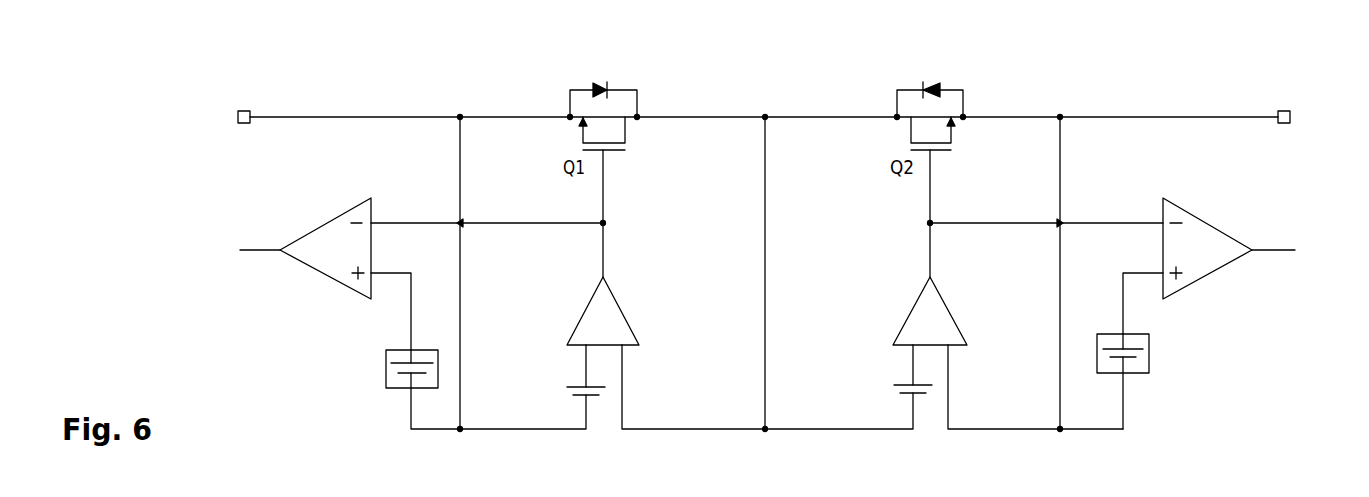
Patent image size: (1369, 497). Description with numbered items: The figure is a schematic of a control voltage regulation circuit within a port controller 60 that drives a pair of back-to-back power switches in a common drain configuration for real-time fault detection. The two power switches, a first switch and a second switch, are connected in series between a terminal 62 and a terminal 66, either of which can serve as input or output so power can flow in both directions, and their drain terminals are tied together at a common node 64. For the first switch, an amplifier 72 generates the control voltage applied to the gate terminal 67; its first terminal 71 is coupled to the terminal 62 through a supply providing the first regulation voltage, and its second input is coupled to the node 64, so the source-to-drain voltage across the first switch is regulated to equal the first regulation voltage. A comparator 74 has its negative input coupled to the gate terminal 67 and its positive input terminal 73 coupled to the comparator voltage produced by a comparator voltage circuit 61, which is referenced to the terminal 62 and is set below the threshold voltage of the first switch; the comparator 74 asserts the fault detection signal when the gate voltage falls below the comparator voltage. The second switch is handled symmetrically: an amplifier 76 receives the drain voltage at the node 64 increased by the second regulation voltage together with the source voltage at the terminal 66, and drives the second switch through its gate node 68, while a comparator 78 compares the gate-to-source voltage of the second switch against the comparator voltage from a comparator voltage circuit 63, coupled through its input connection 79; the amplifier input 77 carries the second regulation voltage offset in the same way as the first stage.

The port controller 60 is at (1183, 47).
The comparator voltage circuit 61 is at (392, 390).
The terminal 62 is at (517, 112).
The comparator voltage circuit 63 is at (1130, 375).
The node 64 is at (785, 112).
The terminal 66 is at (1027, 112).
The gate terminal 67 is at (605, 200).
The second gate node 68 is at (932, 186).
The first terminal of the amplifier 71 is at (585, 360).
The amplifier 72 is at (616, 300).
The positive input terminal 73 is at (410, 315).
The comparator 74 is at (315, 269).
The amplifier 76 is at (943, 300).
The second regulated voltage source VREG2 77 is at (912, 358).
The comparator 78 is at (1207, 275).
The second comparator non-inverting input connection 79 is at (1122, 303).